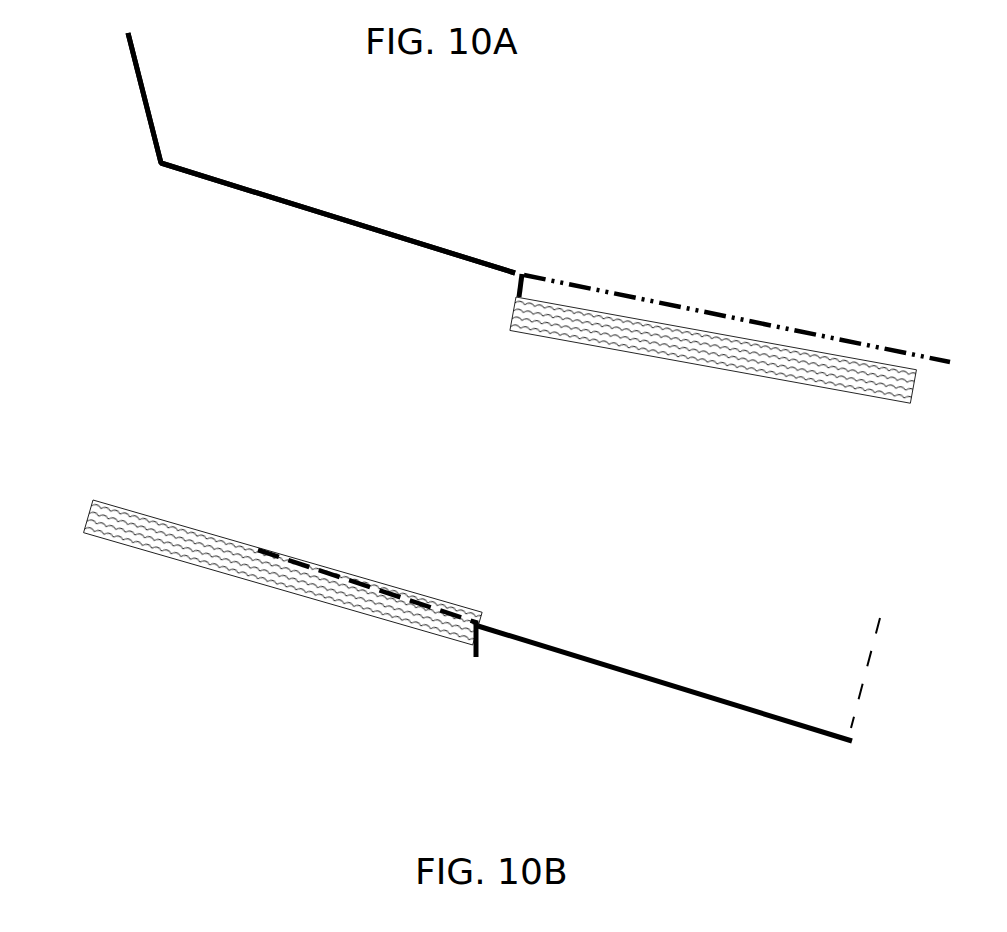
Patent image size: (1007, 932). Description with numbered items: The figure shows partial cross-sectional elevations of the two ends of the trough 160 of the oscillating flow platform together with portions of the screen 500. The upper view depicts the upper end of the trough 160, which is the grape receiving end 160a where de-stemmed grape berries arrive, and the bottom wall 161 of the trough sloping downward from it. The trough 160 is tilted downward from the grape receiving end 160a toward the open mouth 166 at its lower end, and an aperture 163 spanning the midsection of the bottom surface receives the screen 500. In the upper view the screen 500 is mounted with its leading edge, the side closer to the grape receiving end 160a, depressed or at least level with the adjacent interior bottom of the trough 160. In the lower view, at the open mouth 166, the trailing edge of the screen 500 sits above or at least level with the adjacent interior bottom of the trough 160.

In FIG. 10A, the trough 160 is at (520, 158).
In FIG. 10B, the trough 160 is at (209, 440).
In FIG. 10A, the grape receiving end 160a is at (160, 88).
In FIG. 10A, the first panel 161 is at (320, 203).
In FIG. 10A, the aperture 163 is at (670, 278).
In FIG. 10B, the aperture 163 is at (272, 537).
In FIG. 10B, the open mouth 166 is at (846, 680).
In FIG. 10A, the screen 500 is at (728, 380).
In FIG. 10B, the screen 500 is at (268, 598).